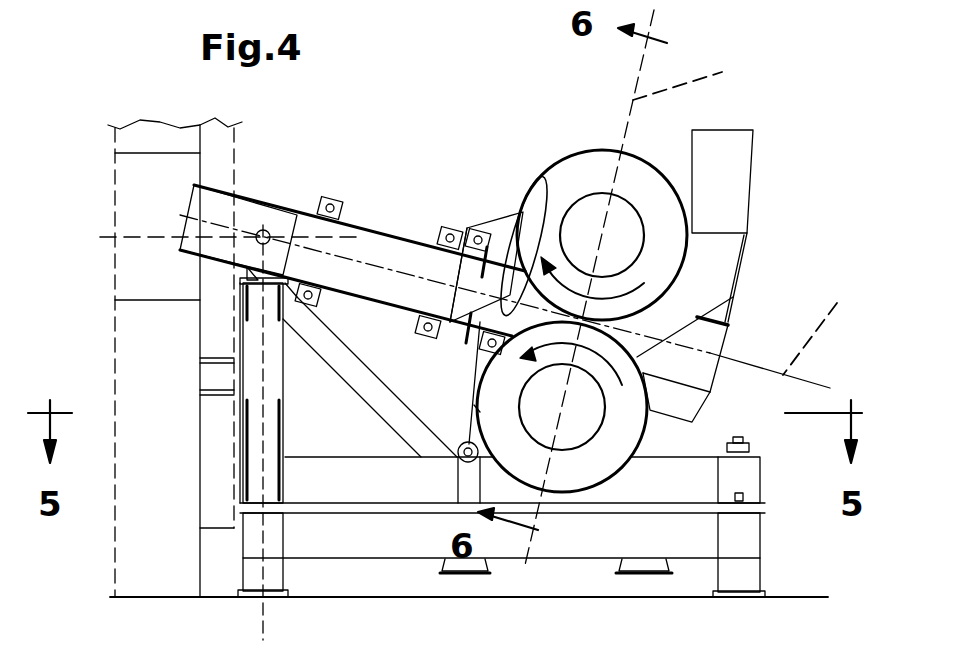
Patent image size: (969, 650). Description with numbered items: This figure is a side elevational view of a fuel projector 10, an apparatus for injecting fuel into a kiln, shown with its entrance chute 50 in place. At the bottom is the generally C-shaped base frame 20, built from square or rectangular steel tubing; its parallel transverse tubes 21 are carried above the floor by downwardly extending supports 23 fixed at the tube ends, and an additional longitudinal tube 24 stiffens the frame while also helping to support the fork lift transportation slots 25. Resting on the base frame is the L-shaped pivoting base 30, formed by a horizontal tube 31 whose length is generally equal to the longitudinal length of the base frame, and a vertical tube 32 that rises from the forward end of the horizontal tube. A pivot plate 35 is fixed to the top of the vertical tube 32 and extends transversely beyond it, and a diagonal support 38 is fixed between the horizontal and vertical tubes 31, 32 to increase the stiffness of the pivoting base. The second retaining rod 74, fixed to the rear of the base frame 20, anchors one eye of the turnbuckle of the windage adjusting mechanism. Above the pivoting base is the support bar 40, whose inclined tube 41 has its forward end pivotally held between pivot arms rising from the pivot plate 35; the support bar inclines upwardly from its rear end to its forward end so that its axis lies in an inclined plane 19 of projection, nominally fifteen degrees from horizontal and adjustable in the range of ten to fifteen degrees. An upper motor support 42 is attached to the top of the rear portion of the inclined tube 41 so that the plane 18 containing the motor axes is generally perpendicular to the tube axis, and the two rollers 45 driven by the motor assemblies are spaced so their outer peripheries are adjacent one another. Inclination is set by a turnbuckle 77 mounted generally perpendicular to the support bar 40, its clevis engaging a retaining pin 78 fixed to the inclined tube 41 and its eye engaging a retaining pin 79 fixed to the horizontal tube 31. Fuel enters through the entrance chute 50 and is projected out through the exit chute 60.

The fuel projector 10 is at (369, 138).
The plane 18 is at (694, 80).
The inclined plane of projection 19 is at (818, 324).
The base frame 20 is at (776, 557).
The transverse tubes 21 is at (760, 535).
The supports 23 is at (765, 582).
The additional longitudinal tube 24 is at (585, 562).
The fork lift transportation slots 25 is at (465, 575).
The pivoting base 30 is at (776, 467).
The horizontal tube 31 is at (337, 507).
The vertical tube 32 is at (240, 350).
The pivot plate 35 is at (243, 272).
The diagonal support 38 is at (307, 348).
The support bar 40 is at (735, 340).
The inclined tube 41 is at (715, 378).
The upper motor support 42 is at (497, 225).
The rollers 45 is at (585, 157).
The entrance chute 50 is at (747, 168).
The exit chute 60 is at (235, 173).
The second retaining rod 74 is at (720, 644).
The turnbuckle 77 is at (470, 410).
The retaining pin 78 is at (543, 178).
The retaining pin 79 is at (462, 470).